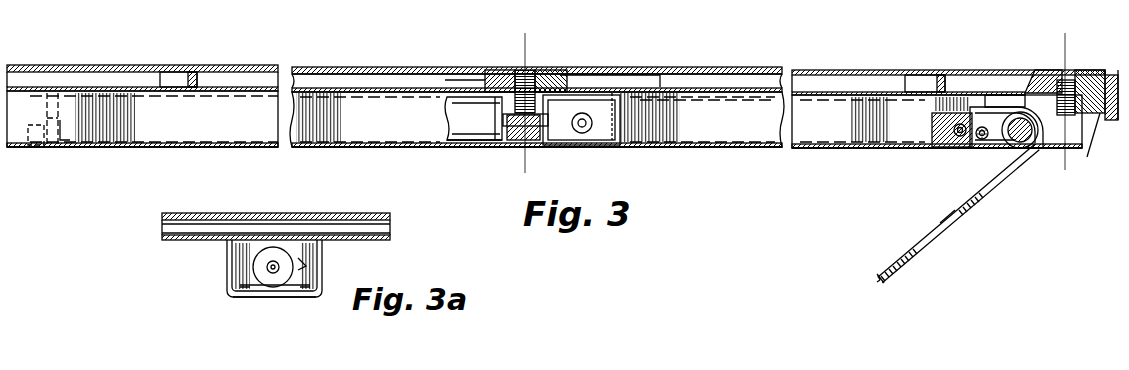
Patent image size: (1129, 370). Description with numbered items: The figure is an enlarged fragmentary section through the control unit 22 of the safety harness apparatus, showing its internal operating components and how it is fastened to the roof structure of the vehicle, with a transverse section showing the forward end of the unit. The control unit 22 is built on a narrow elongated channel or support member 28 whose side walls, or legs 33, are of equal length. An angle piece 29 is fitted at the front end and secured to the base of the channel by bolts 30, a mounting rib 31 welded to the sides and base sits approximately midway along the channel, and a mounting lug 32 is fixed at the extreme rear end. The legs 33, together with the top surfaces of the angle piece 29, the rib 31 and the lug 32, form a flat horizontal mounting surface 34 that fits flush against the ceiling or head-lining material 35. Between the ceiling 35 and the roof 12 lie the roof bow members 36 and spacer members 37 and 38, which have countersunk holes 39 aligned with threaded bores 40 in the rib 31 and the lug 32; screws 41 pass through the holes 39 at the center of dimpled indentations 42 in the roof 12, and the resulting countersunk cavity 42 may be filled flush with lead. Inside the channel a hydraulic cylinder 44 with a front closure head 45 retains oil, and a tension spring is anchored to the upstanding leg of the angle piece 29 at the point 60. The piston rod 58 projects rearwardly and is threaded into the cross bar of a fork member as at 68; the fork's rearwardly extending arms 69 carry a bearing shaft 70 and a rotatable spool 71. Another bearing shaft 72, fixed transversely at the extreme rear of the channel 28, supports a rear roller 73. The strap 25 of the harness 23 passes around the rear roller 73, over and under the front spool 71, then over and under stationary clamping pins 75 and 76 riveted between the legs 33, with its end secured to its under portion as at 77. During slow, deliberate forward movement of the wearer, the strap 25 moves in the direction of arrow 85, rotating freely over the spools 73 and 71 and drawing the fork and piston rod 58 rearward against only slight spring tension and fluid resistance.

In FIG. 3, the roof 12 is at (68, 65).
In FIG. 3A, the roof 12 is at (215, 213).
In FIG. 3, the control unit 22 is at (718, 152).
In FIG. 3A, the control unit 22 is at (282, 299).
In FIG. 3, the harness 23 is at (908, 250).
In FIG. 3, the harness element strap 25 is at (736, 100).
In FIG. 3, the channel or support member 28 is at (240, 122).
In FIG. 3A, the channel or support member 28 is at (240, 299).
In FIG. 3, the angle piece 29 is at (46, 100).
In FIG. 3A, the angle piece 29 is at (233, 252).
In FIG. 3, the bolts 30 is at (34, 145).
In FIG. 3A, the bolts 30 is at (234, 288).
In FIG. 3, the mounting rib 31 is at (541, 126).
In FIG. 3, the mounting lug 32 is at (1111, 120).
In FIG. 3, the legs 33 is at (401, 130).
In FIG. 3A, the legs 33 is at (228, 275).
In FIG. 3, the flat horizontal mounting surface 34 is at (378, 90).
In FIG. 3A, the flat horizontal mounting surface 34 is at (279, 239).
In FIG. 3, the ceiling or head-lining material 35 is at (700, 90).
In FIG. 3A, the ceiling or head-lining material 35 is at (390, 228).
In FIG. 3, the roof bow members 36 is at (198, 82).
In FIG. 3A, the roof bow members 36 is at (172, 226).
In FIG. 3, the spacer member 37 is at (485, 82).
In FIG. 3, the spacer member 38 is at (1022, 95).
In FIG. 3, the countersunk holes 39 is at (556, 74).
In FIG. 3, the threaded bores 40 is at (504, 106).
In FIG. 3, the screws 41 is at (529, 70).
In FIG. 3, the countersunk or dimpled indentations 42 is at (498, 70).
In FIG. 3, the hydraulic cylinder 44 is at (470, 140).
In FIG. 3A, the hydraulic cylinder 44 is at (290, 250).
In FIG. 3, the front closure head 45 is at (66, 130).
In FIG. 3, the piston rod 58 is at (520, 135).
In FIG. 3A, the spring attachment point 60 is at (304, 262).
In FIG. 3, the threaded connection 68 is at (576, 78).
In FIG. 3, the rearwardly extending arms 69 is at (603, 128).
In FIG. 3, the bearing shaft 70 is at (583, 134).
In FIG. 3, the rotatable spool or roller member 71 is at (612, 95).
In FIG. 3, the bearing shaft 72 is at (1022, 148).
In FIG. 3, the rotatable spool or roller member 73 is at (1000, 148).
In FIG. 3, the stationary clamping pin 75 is at (962, 123).
In FIG. 3, the stationary clamping pin 76 is at (980, 140).
In FIG. 3, the strap end securing point 77 is at (944, 125).
In FIG. 3, the arrow 85 is at (930, 220).